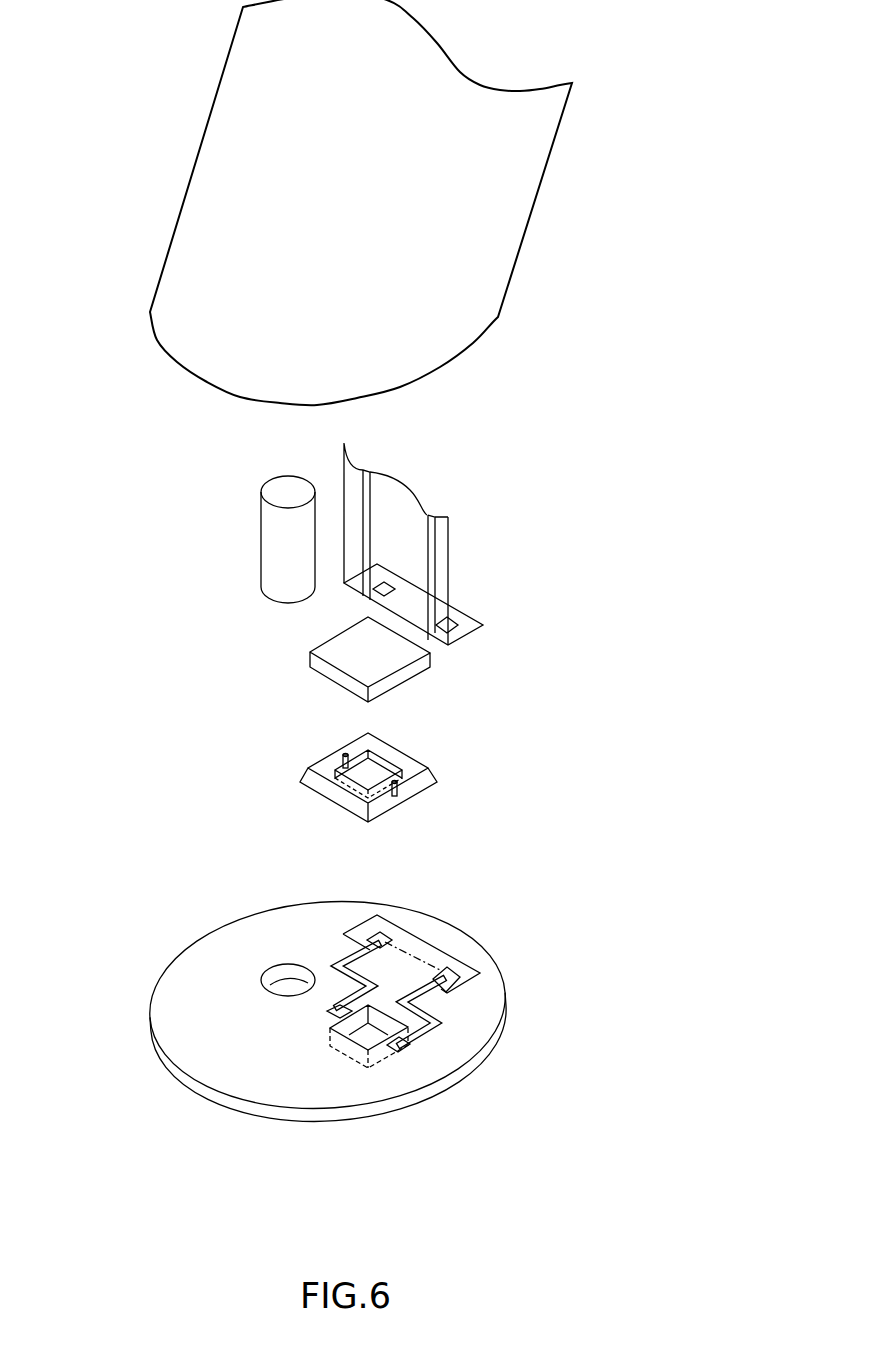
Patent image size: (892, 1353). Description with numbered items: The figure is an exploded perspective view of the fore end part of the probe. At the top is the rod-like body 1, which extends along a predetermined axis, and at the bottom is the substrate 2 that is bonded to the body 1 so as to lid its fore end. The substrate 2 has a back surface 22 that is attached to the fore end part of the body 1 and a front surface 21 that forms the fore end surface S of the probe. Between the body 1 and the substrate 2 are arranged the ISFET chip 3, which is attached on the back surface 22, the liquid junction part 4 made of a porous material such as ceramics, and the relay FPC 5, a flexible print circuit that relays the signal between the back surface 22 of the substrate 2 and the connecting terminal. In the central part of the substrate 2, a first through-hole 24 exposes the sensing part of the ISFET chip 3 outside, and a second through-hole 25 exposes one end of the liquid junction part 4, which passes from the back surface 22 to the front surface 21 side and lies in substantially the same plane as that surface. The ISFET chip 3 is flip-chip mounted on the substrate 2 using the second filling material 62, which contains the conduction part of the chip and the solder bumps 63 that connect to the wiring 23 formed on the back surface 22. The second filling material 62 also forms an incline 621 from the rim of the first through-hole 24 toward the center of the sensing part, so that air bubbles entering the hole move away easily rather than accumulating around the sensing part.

The body 1 is at (170, 114).
The substrate 2 is at (385, 1037).
The ISFET chip 3 is at (407, 680).
The liquid junction part 4 is at (262, 523).
The relay FPC 5 is at (450, 542).
The front surface 21 is at (233, 1110).
The back surface 22 is at (203, 972).
The wiring 23 is at (438, 1027).
The first through-hole 24 is at (363, 1033).
The second through-hole 25 is at (288, 988).
The second filling material 62 is at (369, 798).
The incline 621 is at (392, 762).
The solder bumps 63 is at (343, 757).
The fore end surface S is at (385, 1037).